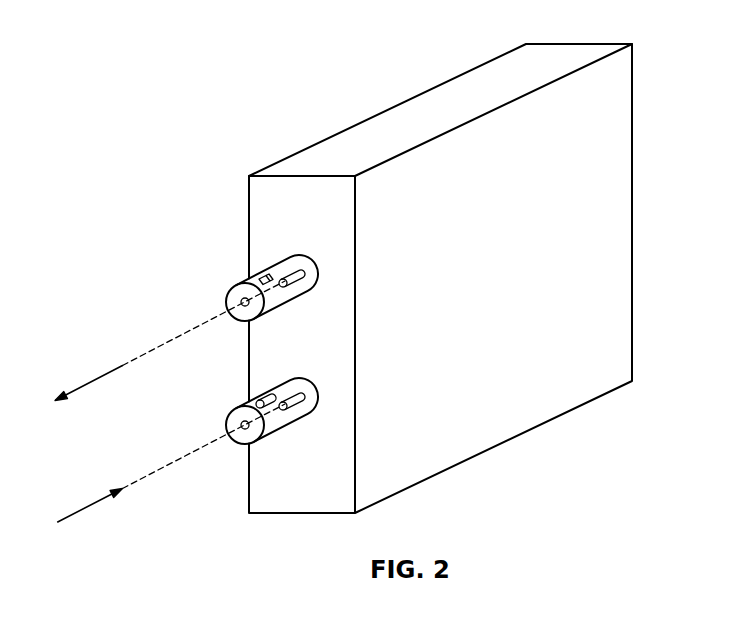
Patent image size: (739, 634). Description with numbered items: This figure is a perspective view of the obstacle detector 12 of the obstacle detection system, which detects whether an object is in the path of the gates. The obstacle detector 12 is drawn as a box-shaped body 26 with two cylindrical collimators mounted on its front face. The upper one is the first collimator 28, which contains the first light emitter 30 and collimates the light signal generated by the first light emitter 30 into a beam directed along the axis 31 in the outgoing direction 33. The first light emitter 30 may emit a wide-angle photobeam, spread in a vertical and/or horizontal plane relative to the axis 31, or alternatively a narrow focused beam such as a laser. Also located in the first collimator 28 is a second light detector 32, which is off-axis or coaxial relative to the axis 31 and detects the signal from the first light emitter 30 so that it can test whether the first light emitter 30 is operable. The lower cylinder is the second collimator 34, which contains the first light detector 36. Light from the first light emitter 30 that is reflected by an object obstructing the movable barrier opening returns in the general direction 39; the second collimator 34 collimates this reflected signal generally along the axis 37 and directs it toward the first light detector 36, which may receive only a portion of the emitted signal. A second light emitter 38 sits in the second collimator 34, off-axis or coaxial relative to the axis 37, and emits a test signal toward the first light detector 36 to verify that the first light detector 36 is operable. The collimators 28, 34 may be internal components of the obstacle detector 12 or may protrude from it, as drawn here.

The obstacle detector 12 is at (335, 83).
The housing 26 is at (563, 58).
The first collimator 28 is at (226, 305).
The first light emitter 30 is at (298, 268).
The second light detector 32 is at (262, 275).
The axis 31 is at (147, 353).
The direction 33 is at (92, 380).
The second collimator 34 is at (226, 428).
The first light detector 36 is at (298, 391).
The second light emitter 38 is at (262, 398).
The axis 37 is at (147, 473).
The direction 39 is at (92, 500).